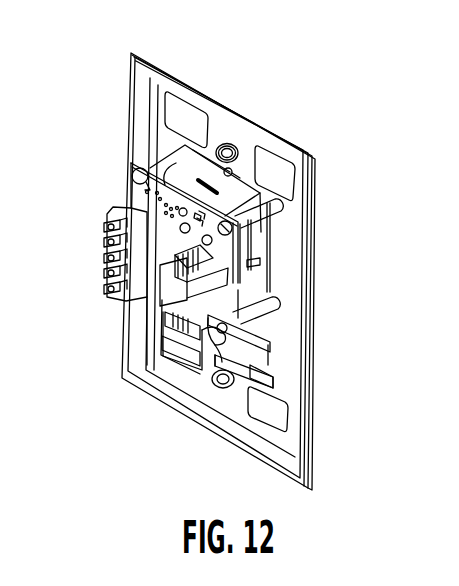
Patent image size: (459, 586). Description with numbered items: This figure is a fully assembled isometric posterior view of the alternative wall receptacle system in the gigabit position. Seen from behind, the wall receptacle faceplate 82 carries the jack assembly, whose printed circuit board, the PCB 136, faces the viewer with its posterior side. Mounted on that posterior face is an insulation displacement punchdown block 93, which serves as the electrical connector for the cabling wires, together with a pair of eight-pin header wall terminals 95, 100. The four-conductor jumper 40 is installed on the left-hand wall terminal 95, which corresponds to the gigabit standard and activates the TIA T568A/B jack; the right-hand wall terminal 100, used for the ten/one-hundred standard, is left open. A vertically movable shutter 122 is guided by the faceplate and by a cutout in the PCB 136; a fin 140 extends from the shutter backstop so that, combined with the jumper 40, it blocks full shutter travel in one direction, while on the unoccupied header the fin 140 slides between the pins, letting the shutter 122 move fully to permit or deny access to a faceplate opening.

The wall receptacle faceplate 82 is at (130, 95).
The PCB 136 is at (176, 162).
The insulation displacement punchdown block 93 is at (122, 207).
The fin 140 is at (175, 246).
The jumper 40 is at (195, 312).
The wall terminal 100 is at (180, 246).
The shutter 122 is at (280, 302).
The wall terminal 95 is at (282, 312).